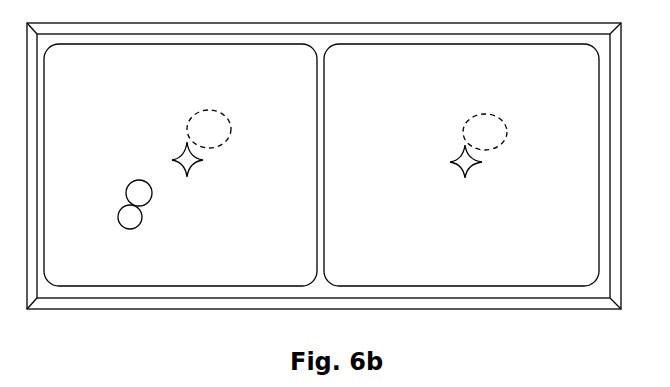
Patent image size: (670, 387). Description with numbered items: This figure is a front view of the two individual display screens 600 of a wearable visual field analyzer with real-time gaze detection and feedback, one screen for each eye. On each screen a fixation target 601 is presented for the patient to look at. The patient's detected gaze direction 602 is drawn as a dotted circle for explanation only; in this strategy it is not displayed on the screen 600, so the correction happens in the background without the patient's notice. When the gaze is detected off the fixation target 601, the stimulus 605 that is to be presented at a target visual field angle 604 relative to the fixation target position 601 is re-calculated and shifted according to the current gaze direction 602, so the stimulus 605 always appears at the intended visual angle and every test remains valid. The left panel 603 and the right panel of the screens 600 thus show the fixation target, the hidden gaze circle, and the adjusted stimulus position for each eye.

The display screens 600 is at (438, 265).
The fixation target 601 is at (470, 168).
The gaze direction 602 is at (498, 148).
The left display panel 603 is at (83, 248).
The target visual field angle 604 is at (135, 222).
The stimulus 605 is at (152, 200).